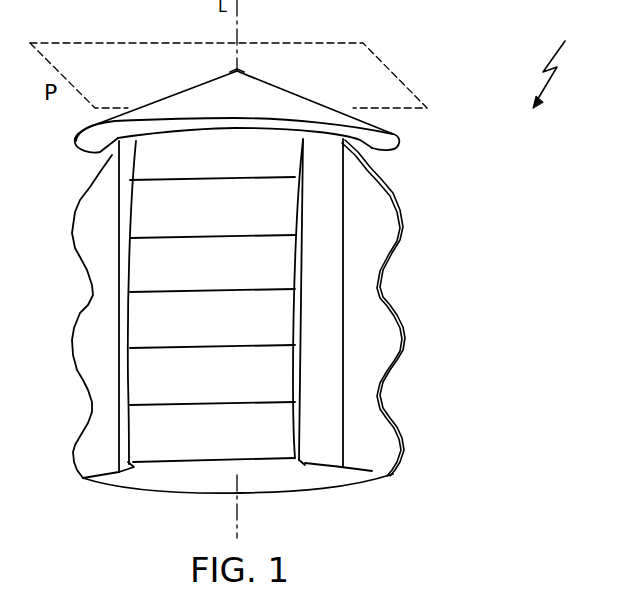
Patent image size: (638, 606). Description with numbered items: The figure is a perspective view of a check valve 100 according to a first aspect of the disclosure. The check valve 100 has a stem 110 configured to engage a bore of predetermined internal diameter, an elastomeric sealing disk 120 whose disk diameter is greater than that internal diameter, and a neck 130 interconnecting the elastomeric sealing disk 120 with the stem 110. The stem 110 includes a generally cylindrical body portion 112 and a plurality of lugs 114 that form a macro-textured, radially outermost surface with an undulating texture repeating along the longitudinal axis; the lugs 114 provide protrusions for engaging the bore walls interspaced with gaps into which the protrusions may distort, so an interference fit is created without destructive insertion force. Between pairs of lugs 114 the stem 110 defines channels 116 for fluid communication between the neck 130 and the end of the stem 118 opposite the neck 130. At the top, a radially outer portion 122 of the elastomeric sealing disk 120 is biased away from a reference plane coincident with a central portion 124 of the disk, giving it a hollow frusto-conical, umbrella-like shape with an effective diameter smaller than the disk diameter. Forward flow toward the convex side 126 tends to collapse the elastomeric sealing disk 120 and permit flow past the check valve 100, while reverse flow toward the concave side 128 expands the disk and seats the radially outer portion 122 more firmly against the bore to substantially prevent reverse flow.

The check valve 100 is at (559, 62).
The stem 110 is at (377, 466).
The generally cylindrical body portion 112 is at (120, 411).
The lugs 114 is at (386, 283).
The channel 116 is at (317, 461).
The end of the stem 118 is at (181, 488).
The elastomeric sealing disk 120 is at (293, 98).
The radially outer portion 122 is at (402, 143).
The central portion 124 is at (238, 70).
The convex side 126 is at (161, 107).
The concave side 128 is at (100, 149).
The neck 130 is at (174, 134).